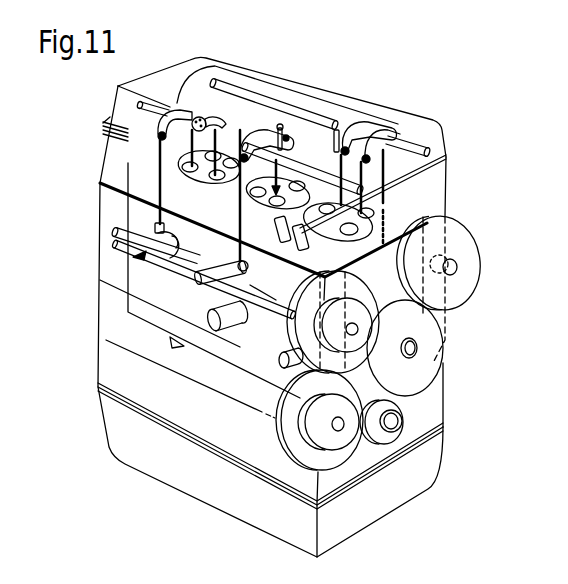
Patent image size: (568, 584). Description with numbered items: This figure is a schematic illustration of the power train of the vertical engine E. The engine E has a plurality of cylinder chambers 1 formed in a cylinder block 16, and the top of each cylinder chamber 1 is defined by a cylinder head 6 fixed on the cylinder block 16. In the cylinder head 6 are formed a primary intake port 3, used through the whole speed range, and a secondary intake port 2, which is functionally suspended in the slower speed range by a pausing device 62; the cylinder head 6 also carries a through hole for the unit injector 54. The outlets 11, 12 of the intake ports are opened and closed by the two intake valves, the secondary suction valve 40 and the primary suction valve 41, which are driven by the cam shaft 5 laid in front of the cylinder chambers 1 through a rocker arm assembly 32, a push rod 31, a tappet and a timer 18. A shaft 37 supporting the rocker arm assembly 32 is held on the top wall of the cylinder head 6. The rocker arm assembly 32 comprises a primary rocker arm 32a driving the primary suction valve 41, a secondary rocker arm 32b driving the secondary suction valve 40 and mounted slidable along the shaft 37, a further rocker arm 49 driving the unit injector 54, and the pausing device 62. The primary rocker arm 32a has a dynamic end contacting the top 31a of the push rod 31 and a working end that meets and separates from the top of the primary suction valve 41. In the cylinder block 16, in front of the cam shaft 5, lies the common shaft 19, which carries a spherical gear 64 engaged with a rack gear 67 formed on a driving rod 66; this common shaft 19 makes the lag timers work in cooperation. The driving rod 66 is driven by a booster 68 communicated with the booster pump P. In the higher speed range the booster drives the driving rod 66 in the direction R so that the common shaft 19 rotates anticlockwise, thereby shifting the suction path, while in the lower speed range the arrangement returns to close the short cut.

The cylinder chamber 1 is at (233, 136).
The secondary intake port 2 is at (306, 246).
The primary intake port 3 is at (283, 233).
The cam shaft 5 is at (373, 324).
The cylinder head 6 is at (373, 194).
The outlet of the intake port 11 is at (212, 176).
The outlet of the intake port 12 is at (192, 172).
The cylinder block 16 is at (342, 317).
The timer 18 is at (178, 248).
The common shaft 19 is at (181, 270).
The push rod 31 is at (158, 144).
The top of the push rod 31a is at (118, 122).
The rocker arm assembly 32 is at (320, 97).
The primary rocker arm 32a is at (213, 80).
The secondary rocker arm 32b is at (256, 84).
The shaft 37 is at (232, 146).
The secondary suction valve 40 is at (243, 199).
The primary suction valve 41 is at (193, 130).
The rocker arm 49 is at (255, 158).
The unit injector 54 is at (284, 138).
The pausing device 62 is at (118, 88).
The spherical gear 64 is at (262, 291).
The driving rod 66 is at (280, 362).
The rack gear 67 is at (244, 306).
The booster 68 is at (217, 330).
The vertical engine E is at (368, 96).
The booster pump P is at (405, 348).
The direction R is at (256, 302).